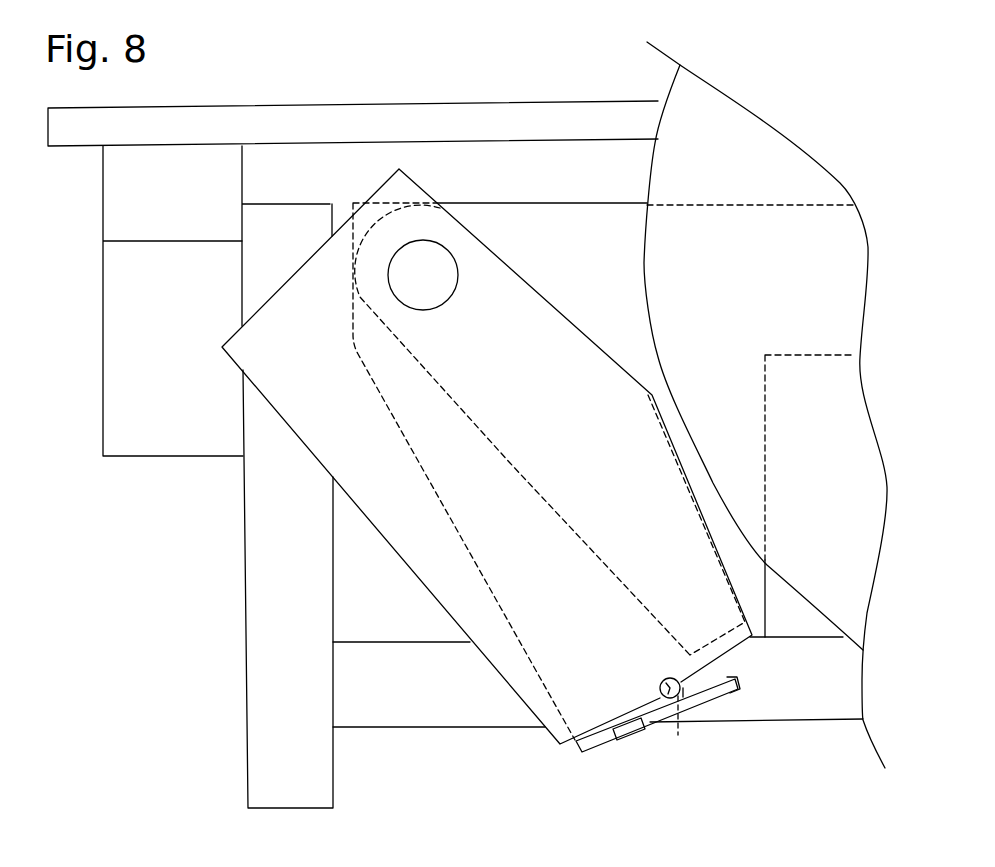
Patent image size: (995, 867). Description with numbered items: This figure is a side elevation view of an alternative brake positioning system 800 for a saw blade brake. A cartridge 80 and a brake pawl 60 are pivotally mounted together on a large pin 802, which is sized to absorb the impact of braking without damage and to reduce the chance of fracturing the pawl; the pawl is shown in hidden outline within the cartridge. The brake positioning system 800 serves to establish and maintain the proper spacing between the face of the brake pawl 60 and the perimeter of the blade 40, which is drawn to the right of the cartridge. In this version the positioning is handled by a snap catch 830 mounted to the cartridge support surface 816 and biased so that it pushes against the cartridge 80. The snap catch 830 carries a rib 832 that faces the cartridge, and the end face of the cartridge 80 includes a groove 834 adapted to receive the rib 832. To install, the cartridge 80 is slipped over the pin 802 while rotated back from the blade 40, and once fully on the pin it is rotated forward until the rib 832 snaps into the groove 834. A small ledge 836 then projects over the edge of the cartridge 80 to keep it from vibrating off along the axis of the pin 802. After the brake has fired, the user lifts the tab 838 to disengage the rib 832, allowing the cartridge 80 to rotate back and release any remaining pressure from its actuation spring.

The blade 40 is at (698, 284).
The brake pawl 60 is at (510, 463).
The cartridge 80 is at (306, 432).
The pin 802 is at (405, 284).
The brake positioning system 800 is at (474, 768).
The cartridge mounting surface 816 is at (573, 757).
The snap catch 830 is at (652, 738).
The rib 832 is at (688, 680).
The groove 834 is at (687, 728).
The ledge 836 is at (659, 686).
The tab 838 is at (728, 686).